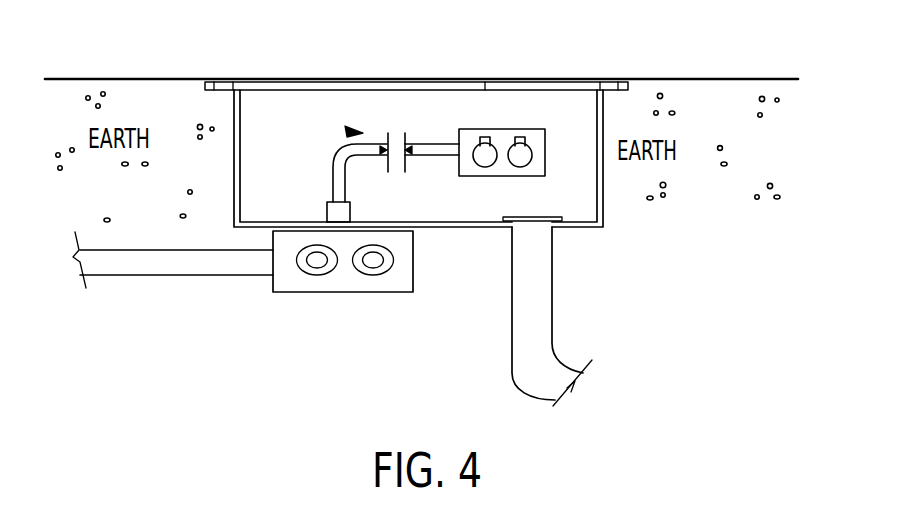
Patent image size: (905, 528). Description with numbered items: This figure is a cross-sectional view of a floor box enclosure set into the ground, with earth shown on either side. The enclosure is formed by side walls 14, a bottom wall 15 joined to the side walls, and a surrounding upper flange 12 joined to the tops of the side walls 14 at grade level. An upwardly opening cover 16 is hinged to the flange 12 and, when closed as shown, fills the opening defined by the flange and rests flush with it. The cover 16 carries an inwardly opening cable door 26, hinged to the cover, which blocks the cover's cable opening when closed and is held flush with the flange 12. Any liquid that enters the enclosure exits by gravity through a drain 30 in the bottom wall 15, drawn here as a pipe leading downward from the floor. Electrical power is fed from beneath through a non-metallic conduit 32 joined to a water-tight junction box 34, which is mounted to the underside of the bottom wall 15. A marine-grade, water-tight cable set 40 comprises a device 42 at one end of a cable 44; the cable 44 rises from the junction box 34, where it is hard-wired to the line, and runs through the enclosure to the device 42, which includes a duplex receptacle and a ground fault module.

The upper flange 12 is at (223, 78).
The side walls 14 is at (233, 175).
The bottom wall 15 is at (577, 232).
The cover 16 is at (307, 78).
The cable door 26 is at (518, 78).
The drain 30 is at (542, 312).
The conduit 32 is at (181, 265).
The junction box 34 is at (395, 280).
The cable set 40 is at (350, 131).
The device 42 is at (500, 147).
The cable 44 is at (333, 188).